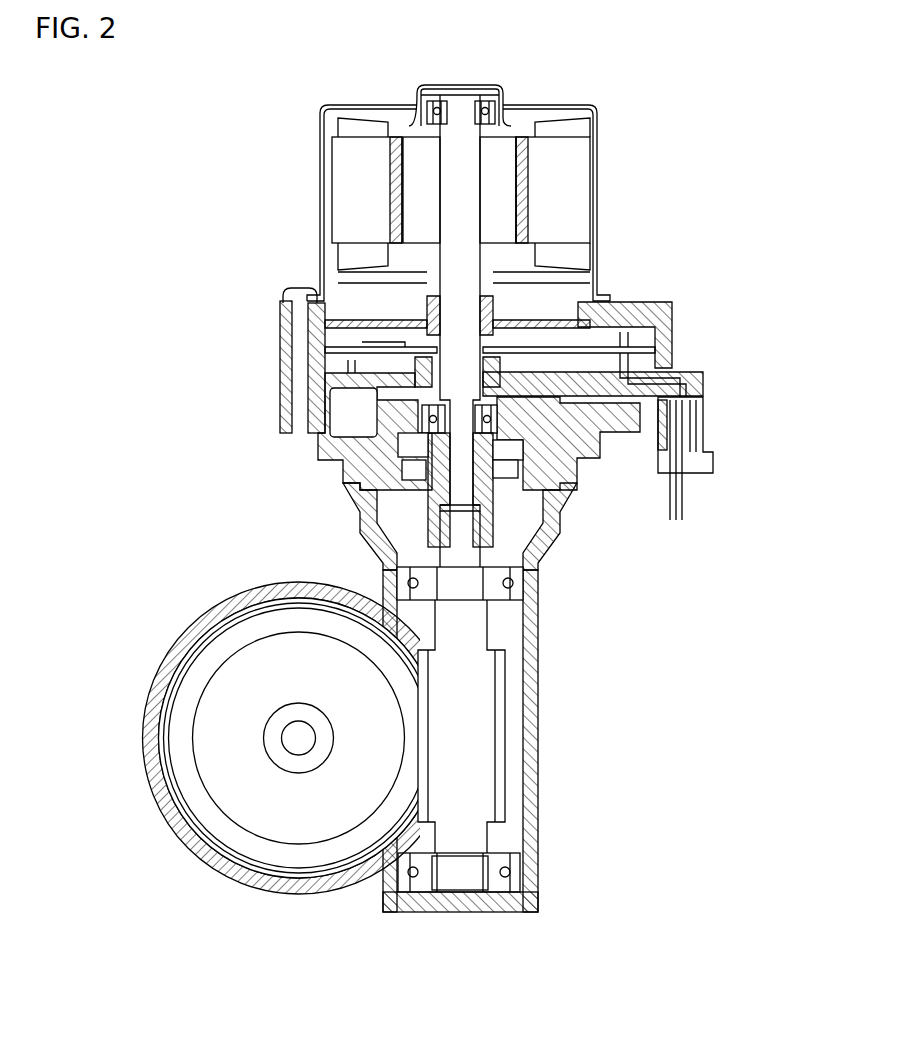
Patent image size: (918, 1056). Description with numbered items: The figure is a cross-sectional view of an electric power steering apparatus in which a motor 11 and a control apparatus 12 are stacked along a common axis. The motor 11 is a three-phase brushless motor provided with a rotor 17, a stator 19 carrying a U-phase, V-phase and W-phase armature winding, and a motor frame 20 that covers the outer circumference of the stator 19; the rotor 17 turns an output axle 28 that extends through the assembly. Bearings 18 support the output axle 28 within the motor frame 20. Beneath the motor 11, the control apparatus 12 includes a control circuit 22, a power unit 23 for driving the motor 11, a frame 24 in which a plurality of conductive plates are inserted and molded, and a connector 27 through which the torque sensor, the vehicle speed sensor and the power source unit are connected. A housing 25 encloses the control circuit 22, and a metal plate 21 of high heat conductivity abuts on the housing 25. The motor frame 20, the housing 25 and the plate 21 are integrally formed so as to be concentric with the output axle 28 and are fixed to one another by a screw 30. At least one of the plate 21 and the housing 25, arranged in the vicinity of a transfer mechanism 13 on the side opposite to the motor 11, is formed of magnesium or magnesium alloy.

The motor 11 is at (215, 209).
The control apparatus 12 is at (213, 385).
The transfer mechanism 13 is at (540, 738).
The rotor 17 is at (412, 177).
The bearing 18 is at (597, 120).
The stator 19 is at (580, 187).
The motor frame 20 is at (321, 131).
The plate 21 is at (283, 417).
The control circuit 22 is at (585, 330).
The power unit 23 is at (557, 400).
The frame 24 is at (292, 385).
The housing 25 is at (672, 307).
The connector 27 is at (700, 413).
The output axle 28 is at (460, 483).
The screw 30 is at (299, 289).